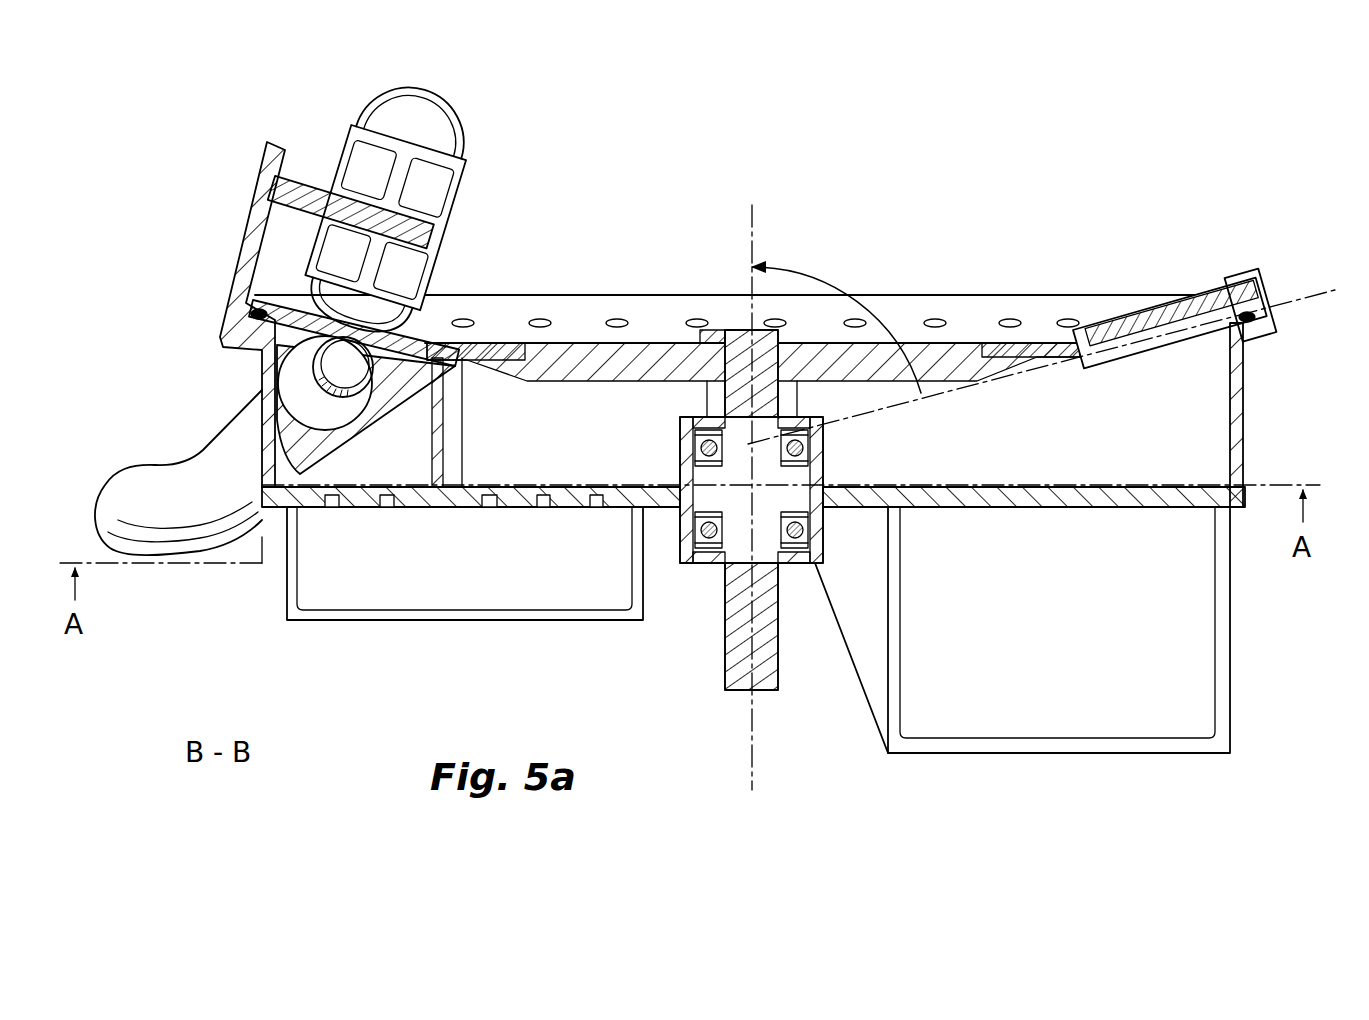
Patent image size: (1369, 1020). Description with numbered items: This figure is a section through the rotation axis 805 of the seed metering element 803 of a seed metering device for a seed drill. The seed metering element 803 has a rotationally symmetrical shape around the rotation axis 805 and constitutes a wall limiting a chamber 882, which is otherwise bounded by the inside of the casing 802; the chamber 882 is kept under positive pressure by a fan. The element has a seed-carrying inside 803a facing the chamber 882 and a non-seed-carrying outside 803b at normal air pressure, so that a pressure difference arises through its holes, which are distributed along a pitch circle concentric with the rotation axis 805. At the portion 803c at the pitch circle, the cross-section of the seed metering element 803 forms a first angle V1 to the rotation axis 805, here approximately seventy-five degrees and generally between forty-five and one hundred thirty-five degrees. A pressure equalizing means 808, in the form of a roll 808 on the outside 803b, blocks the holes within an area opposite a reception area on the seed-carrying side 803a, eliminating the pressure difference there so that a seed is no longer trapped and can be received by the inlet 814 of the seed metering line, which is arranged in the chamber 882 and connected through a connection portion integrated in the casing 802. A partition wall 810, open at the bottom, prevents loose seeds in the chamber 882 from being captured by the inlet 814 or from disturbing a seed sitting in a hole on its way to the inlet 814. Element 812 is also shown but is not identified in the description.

The casing 802 is at (1233, 447).
The seed metering element 803 is at (947, 295).
The seed-carrying inside 803a is at (1153, 337).
The outside 803b is at (1123, 337).
The portion at the pitch circle 803c is at (1247, 280).
The rotation axis 805 is at (752, 732).
The pressure equalizing means 808 is at (433, 118).
The partition wall 810 is at (463, 417).
The hook 812 is at (186, 445).
The inlet 814 is at (425, 350).
The chamber 882 is at (1027, 449).
The first angle V1 is at (838, 282).